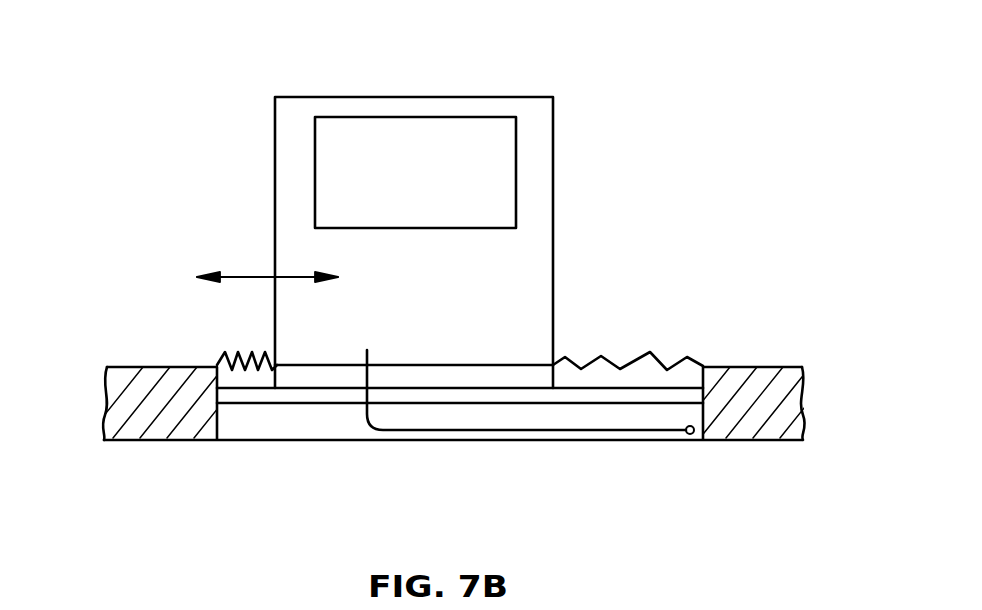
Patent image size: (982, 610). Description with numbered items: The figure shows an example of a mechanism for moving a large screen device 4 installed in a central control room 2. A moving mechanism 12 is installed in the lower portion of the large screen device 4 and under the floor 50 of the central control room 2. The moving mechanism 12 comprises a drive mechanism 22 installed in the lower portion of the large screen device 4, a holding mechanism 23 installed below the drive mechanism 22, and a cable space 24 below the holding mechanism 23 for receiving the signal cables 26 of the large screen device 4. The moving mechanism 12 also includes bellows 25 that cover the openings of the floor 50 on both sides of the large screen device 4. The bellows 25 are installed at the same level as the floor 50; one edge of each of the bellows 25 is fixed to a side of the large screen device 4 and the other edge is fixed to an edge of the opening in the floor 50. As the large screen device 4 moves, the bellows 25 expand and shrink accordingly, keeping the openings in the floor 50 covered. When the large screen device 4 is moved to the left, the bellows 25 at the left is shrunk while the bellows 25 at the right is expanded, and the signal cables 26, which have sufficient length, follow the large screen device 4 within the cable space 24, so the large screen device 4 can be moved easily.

The central control room 2 is at (482, 276).
The large screen device 4 is at (535, 97).
The moving mechanism 12 is at (481, 311).
The drive mechanism 22 is at (532, 377).
The holding mechanism 23 is at (588, 397).
The cable space 24 is at (602, 413).
The bellows 25 is at (254, 352).
The signal cables 26 is at (522, 440).
The floor 50 is at (752, 367).